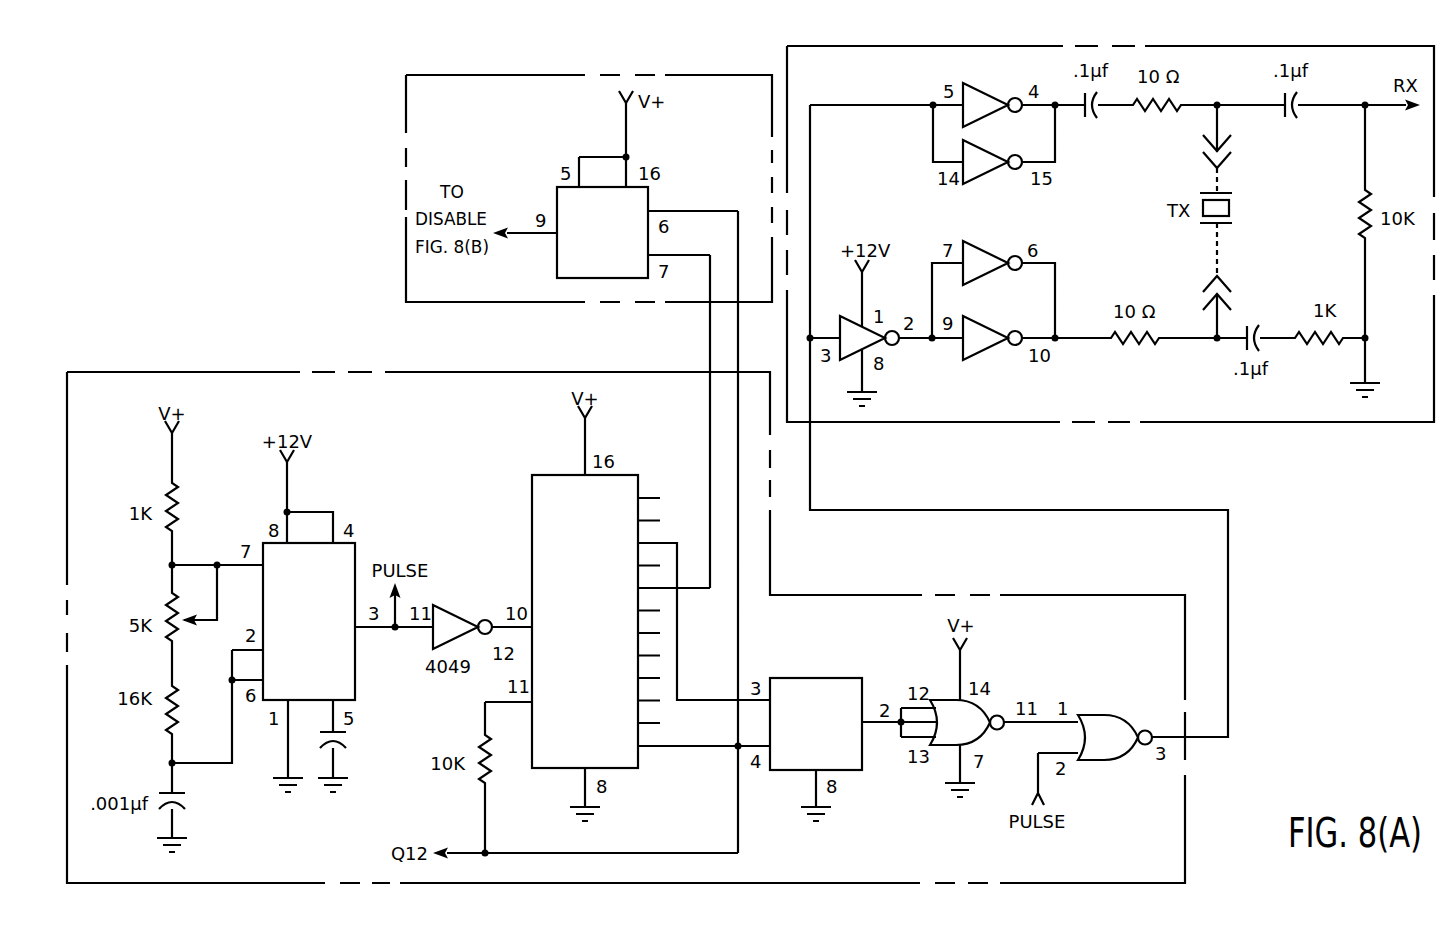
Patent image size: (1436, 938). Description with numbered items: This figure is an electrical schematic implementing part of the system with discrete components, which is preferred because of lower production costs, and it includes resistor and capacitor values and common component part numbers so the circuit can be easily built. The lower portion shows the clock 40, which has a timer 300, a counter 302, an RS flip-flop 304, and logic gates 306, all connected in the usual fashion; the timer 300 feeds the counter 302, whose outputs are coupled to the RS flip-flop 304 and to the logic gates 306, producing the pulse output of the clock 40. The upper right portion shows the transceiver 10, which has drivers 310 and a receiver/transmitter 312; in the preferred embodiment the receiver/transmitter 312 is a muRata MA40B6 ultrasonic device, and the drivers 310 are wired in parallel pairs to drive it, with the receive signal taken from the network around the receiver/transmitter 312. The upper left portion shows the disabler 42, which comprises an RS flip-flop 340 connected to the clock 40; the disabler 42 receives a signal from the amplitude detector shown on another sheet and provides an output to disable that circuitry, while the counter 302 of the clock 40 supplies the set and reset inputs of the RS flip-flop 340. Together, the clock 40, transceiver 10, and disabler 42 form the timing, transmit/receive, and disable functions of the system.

The transceiver 10 is at (940, 46).
The clock 40 is at (198, 372).
The disabler 42 is at (406, 115).
The timer 300 is at (357, 548).
The counter 302 is at (532, 520).
The RS flip-flop 304 is at (820, 678).
The logic gates 306 is at (1093, 715).
The drivers 310 is at (985, 251).
The receiver/transmitter 312 is at (1248, 206).
The RS flip-flop 340 is at (648, 202).